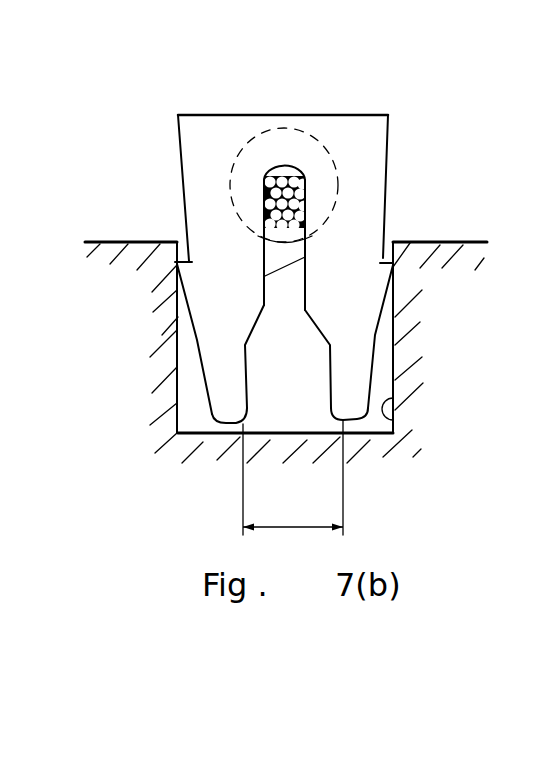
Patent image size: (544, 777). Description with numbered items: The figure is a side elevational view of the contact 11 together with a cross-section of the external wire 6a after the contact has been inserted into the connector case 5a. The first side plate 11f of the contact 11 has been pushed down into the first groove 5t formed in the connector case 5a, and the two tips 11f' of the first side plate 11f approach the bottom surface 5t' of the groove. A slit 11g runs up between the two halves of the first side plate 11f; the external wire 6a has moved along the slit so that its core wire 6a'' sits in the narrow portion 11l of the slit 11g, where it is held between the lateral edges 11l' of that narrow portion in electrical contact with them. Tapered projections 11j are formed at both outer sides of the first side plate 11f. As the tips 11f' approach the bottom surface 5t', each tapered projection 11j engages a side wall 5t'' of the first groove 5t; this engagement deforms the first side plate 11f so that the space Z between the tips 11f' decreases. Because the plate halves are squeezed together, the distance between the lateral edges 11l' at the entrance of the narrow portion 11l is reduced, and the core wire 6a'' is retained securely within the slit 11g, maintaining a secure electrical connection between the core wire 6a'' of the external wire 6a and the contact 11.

The connector case 5a is at (122, 260).
The first groove 5t is at (232, 339).
The bottom surface of first groove 5t' is at (277, 459).
The side walls of first groove 5t'' is at (432, 429).
The external wire 6a is at (264, 145).
The core wire 6a'' is at (361, 150).
The contact 11 is at (329, 115).
The first side plate 11f is at (319, 264).
The tip of first side plate 11f' is at (293, 469).
The slit 11g is at (297, 407).
The tapered projection 11j is at (393, 266).
The narrow portion 11l is at (371, 248).
The lateral edge 11l' is at (255, 269).
The space between tips Z is at (293, 489).